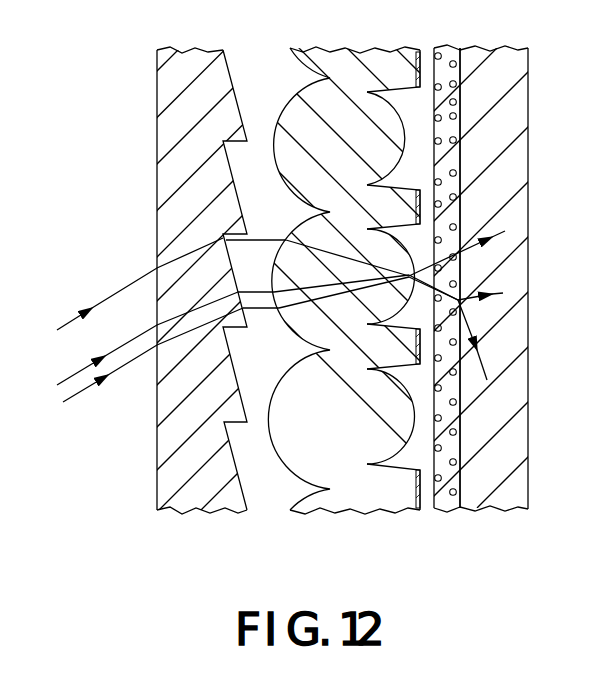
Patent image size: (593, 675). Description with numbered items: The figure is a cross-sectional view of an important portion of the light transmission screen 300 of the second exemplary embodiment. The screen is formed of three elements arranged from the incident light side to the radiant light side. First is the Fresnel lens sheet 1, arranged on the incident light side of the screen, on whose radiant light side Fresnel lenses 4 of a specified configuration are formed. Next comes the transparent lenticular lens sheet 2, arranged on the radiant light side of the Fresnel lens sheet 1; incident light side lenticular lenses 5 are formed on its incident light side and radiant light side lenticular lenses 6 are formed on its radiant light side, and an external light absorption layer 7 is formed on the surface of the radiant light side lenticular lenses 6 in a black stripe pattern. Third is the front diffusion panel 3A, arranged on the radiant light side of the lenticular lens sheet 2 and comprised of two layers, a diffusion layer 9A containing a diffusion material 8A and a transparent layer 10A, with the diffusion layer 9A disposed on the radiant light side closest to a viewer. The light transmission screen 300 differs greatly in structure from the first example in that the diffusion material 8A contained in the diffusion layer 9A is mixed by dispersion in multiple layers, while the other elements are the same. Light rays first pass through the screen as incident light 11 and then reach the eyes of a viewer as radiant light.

The light transmission screen 300 is at (541, 27).
The Fresnel lens sheet 1 is at (198, 512).
The lenticular lens sheet 2 is at (367, 513).
The front diffusion panel 3A is at (315, 320).
The Fresnel lenses 4 is at (232, 448).
The incident light side lenticular lenses 5 is at (277, 397).
The radiant light side lenticular lenses 6 is at (415, 413).
The external light absorption layer 7 is at (417, 508).
The diffusion material 8A is at (440, 508).
The diffusion layer 9A is at (452, 508).
The transparent layer 10A is at (418, 557).
The incident light 11 is at (268, 328).